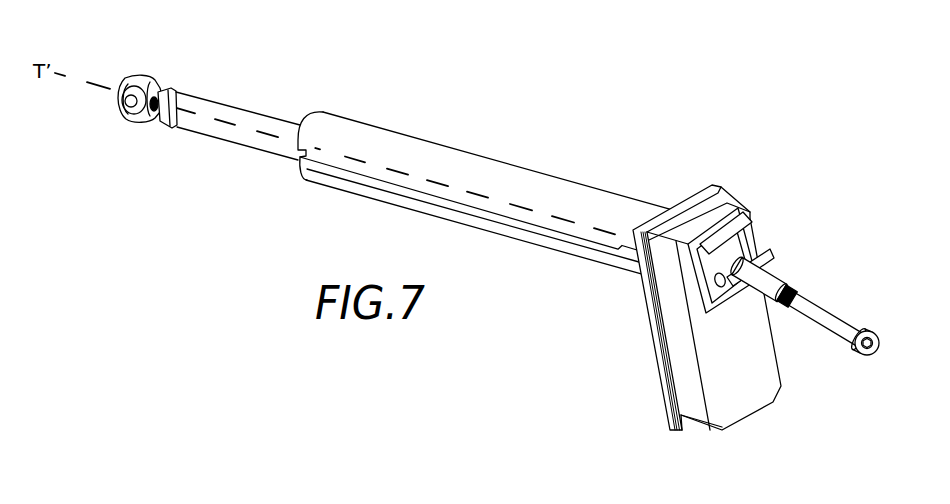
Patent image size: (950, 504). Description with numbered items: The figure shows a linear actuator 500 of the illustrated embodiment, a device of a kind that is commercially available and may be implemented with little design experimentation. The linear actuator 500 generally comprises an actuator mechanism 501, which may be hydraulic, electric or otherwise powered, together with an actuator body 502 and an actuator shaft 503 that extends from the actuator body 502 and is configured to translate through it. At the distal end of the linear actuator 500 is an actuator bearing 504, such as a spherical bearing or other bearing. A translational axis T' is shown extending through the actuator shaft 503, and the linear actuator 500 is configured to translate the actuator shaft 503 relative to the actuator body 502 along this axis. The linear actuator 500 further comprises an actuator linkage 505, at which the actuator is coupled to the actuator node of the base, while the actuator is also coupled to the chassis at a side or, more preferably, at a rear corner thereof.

The linear actuator 500 is at (658, 109).
The actuator mechanism 501 is at (682, 377).
The actuator body 502 is at (480, 170).
The actuator shaft 503 is at (240, 113).
The actuator bearing 504 is at (122, 115).
The actuator linkage 505 is at (817, 310).